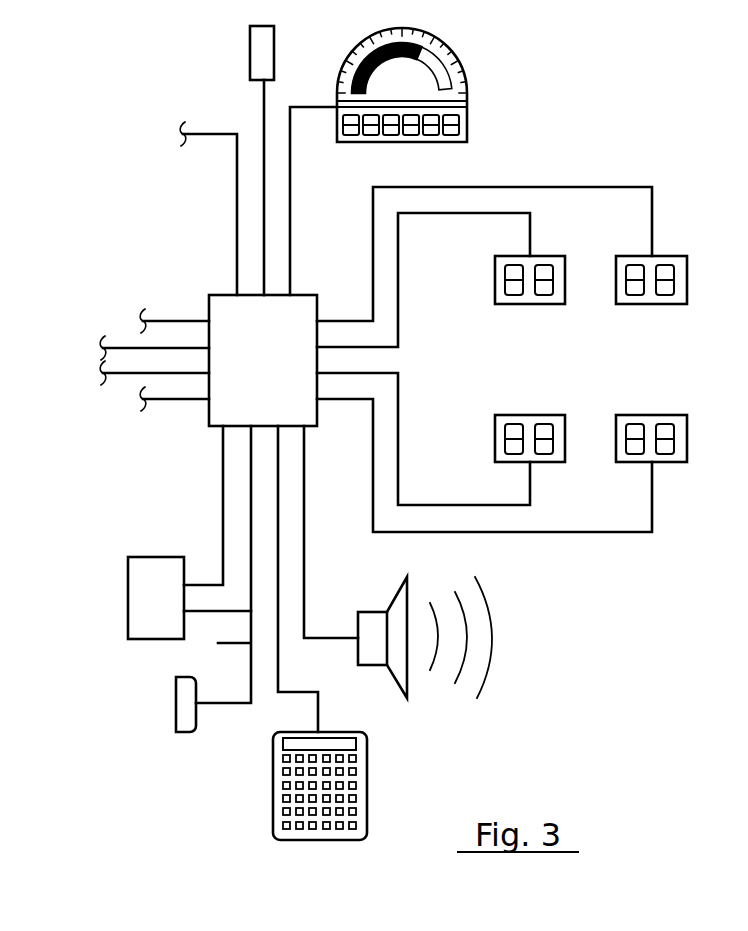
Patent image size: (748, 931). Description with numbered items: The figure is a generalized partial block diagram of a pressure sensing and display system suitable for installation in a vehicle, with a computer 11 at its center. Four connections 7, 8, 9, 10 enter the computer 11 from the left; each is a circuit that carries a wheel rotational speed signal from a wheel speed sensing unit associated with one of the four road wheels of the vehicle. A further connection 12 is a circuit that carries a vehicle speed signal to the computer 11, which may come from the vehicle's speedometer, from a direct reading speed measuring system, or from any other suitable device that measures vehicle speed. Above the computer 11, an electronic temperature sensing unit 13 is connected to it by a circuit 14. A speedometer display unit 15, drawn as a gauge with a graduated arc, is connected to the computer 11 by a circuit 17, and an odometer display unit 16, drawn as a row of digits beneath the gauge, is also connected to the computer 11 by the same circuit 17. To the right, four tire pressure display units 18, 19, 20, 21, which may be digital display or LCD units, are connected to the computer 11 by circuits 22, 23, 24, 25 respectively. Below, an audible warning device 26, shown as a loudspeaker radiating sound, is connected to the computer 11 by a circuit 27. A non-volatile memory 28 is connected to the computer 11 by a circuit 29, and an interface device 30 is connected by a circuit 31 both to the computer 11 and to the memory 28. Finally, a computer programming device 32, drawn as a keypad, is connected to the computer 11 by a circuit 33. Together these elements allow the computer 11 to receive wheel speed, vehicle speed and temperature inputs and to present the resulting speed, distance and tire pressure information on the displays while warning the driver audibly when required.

The connection 7 is at (163, 400).
The connection 8 is at (136, 373).
The connection 9 is at (136, 348).
The connection 10 is at (163, 321).
The computer 11 is at (223, 308).
The connection 12 is at (237, 213).
The electronic temperature sensing unit 13 is at (257, 53).
The circuit 14 is at (264, 107).
The speedometer display unit 15 is at (455, 60).
The odometer display unit 16 is at (460, 128).
The circuit 17 is at (313, 107).
The tire pressure display unit 18 is at (495, 273).
The tire pressure display unit 19 is at (687, 273).
The tire pressure display unit 20 is at (495, 452).
The tire pressure display unit 21 is at (687, 448).
The circuit 22 is at (482, 211).
The circuit 23 is at (598, 187).
The circuit 24 is at (477, 507).
The circuit 25 is at (598, 532).
The audible warning device 26 is at (398, 670).
The circuit 27 is at (335, 638).
The non-volatile memory 28 is at (157, 572).
The circuit 29 is at (217, 583).
The interface device 30 is at (183, 712).
The circuit 31 is at (217, 644).
The computer programming device 32 is at (278, 793).
The circuit 33 is at (287, 692).